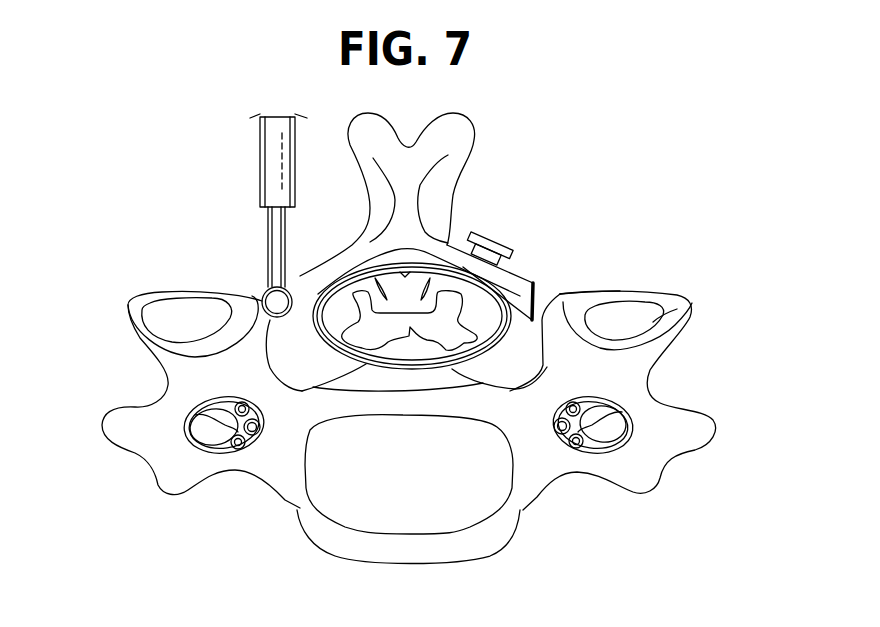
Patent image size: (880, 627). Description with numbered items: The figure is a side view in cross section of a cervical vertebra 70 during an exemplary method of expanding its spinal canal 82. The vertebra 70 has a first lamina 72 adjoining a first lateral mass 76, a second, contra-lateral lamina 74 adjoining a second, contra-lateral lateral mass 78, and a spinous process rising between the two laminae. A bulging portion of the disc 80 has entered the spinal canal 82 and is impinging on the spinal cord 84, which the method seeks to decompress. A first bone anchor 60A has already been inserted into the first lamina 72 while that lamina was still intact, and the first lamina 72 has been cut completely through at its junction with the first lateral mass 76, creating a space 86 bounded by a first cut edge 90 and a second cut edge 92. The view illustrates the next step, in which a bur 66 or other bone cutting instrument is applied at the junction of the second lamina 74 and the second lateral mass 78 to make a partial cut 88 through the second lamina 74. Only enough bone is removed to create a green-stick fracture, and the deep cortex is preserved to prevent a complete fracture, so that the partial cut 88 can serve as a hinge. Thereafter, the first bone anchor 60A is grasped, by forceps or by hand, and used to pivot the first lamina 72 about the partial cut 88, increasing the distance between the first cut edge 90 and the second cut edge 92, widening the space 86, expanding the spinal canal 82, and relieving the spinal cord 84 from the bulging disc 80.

The bur 66 is at (261, 153).
The vertebra 70 is at (704, 296).
The first lamina 72 is at (510, 273).
The second, contra-lateral lamina 74 is at (320, 272).
The first lateral mass 76 is at (660, 317).
The second, contra-lateral lateral mass 78 is at (405, 160).
The bulging disc 80 is at (371, 376).
The spinal canal 82 is at (290, 368).
The spinal cord 84 is at (320, 338).
The space 86 is at (553, 302).
The partial cut 88 is at (263, 296).
The first cut edge 90 is at (540, 290).
The second cut edge 92 is at (543, 340).
The first bone anchor 60A is at (493, 230).